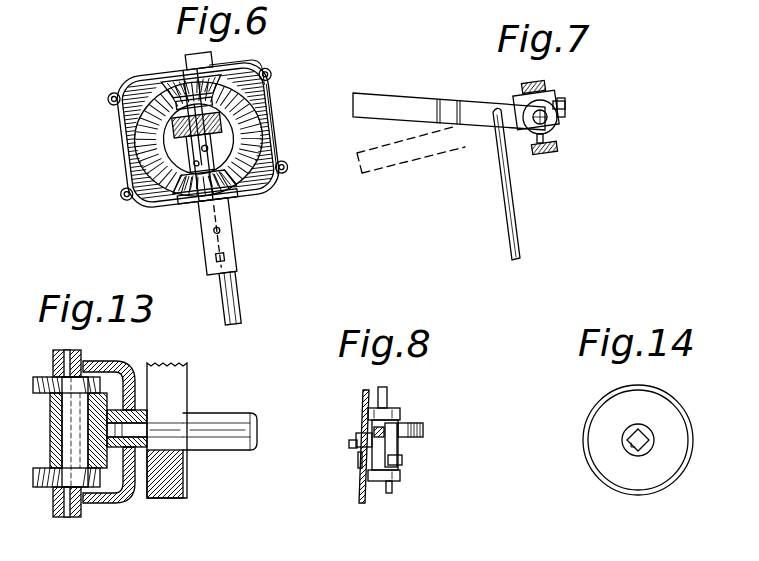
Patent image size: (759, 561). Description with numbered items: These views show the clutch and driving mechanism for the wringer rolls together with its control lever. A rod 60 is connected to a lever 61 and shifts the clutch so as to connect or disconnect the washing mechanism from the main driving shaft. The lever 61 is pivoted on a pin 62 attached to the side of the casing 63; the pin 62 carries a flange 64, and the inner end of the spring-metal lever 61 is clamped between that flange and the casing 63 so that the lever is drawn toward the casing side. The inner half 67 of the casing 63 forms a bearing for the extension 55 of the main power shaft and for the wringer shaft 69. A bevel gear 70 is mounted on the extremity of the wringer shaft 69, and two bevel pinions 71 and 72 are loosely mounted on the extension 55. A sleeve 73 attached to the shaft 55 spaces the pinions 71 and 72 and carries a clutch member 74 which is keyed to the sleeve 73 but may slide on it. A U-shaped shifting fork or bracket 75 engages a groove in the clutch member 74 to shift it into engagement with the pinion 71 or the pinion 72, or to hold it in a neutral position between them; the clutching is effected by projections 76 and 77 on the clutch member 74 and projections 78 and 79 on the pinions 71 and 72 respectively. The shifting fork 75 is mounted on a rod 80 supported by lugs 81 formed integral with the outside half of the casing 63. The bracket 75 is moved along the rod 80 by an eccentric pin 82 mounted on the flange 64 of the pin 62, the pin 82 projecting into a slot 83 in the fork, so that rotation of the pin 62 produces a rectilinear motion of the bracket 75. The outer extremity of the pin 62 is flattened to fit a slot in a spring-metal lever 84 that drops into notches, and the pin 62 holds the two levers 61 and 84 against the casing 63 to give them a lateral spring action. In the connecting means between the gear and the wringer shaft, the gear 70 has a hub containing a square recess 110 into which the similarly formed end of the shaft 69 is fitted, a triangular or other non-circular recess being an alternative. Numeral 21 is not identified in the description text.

In FIG. 13, the drive shaft 21 is at (220, 448).
In FIG. 6, the extension of the main power shaft 55 is at (237, 297).
In FIG. 13, the extension of the main power shaft 55 is at (67, 520).
In FIG. 7, the rod 60 is at (503, 190).
In FIG. 7, the lever 61 is at (412, 103).
In FIG. 8, the lever 61 is at (387, 392).
In FIG. 7, the pin 62 is at (558, 124).
In FIG. 8, the pin 62 is at (367, 427).
In FIG. 8, the casing 63 is at (364, 505).
In FIG. 8, the flange 64 is at (393, 458).
In FIG. 6, the inner half of the casing 67 is at (278, 123).
In FIG. 13, the inner half of the casing 67 is at (110, 365).
In FIG. 13, the wringer shaft 69 is at (168, 427).
In FIG. 6, the bevel gear 70 is at (128, 172).
In FIG. 13, the bevel gear 70 is at (111, 470).
In FIG. 14, the bevel gear 70 is at (693, 408).
In FIG. 6, the bevel pinion 71 is at (162, 84).
In FIG. 13, the bevel pinion 71 is at (45, 380).
In FIG. 6, the bevel pinion 72 is at (162, 210).
In FIG. 13, the bevel pinion 72 is at (45, 478).
In FIG. 6, the sleeve 73 is at (158, 186).
In FIG. 13, the sleeve 73 is at (62, 408).
In FIG. 6, the clutch member 74 is at (170, 140).
In FIG. 6, the shifting fork 75 is at (138, 124).
In FIG. 7, the shifting fork 75 is at (565, 108).
In FIG. 8, the shifting fork 75 is at (423, 430).
In FIG. 6, the projection 76 is at (127, 186).
In FIG. 6, the projection 77 is at (240, 72).
In FIG. 6, the projection 78 is at (275, 91).
In FIG. 6, the projection 79 is at (279, 156).
In FIG. 7, the rod 80 is at (541, 152).
In FIG. 8, the rod 80 is at (397, 463).
In FIG. 7, the lugs 81 is at (528, 83).
In FIG. 8, the lugs 81 is at (400, 410).
In FIG. 7, the eccentric pin 82 is at (546, 93).
In FIG. 8, the eccentric pin 82 is at (370, 428).
In FIG. 7, the slot 83 is at (565, 100).
In FIG. 8, the slot 83 is at (357, 447).
In FIG. 8, the lever 84 is at (358, 463).
In FIG. 14, the square recess 110 is at (628, 452).